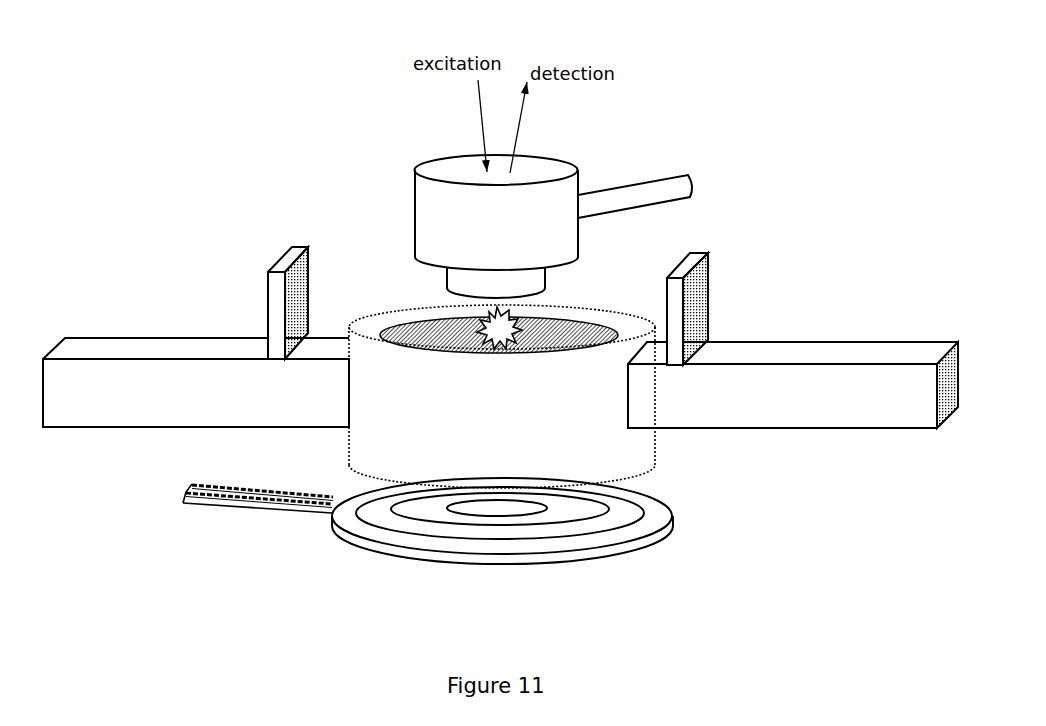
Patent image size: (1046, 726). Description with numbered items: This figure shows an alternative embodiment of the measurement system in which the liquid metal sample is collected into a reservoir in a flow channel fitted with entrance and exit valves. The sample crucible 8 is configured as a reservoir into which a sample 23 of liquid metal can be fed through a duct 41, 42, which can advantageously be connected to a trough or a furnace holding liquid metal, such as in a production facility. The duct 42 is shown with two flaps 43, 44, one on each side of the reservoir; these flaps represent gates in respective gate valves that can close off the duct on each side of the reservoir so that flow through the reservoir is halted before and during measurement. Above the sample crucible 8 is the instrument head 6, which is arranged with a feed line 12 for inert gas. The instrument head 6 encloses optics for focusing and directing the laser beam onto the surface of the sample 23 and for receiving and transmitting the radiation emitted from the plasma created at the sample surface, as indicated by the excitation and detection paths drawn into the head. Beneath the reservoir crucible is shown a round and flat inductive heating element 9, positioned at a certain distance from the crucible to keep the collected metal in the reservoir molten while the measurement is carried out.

The instrument head 6 is at (428, 212).
The feed line 12 is at (713, 175).
The sample crucible 8 is at (387, 445).
The sample 23 is at (445, 327).
The inductive heating element 9 is at (383, 517).
The duct 41 is at (797, 347).
The duct 42 is at (207, 380).
The flap 43 is at (682, 308).
The flap 44 is at (268, 285).